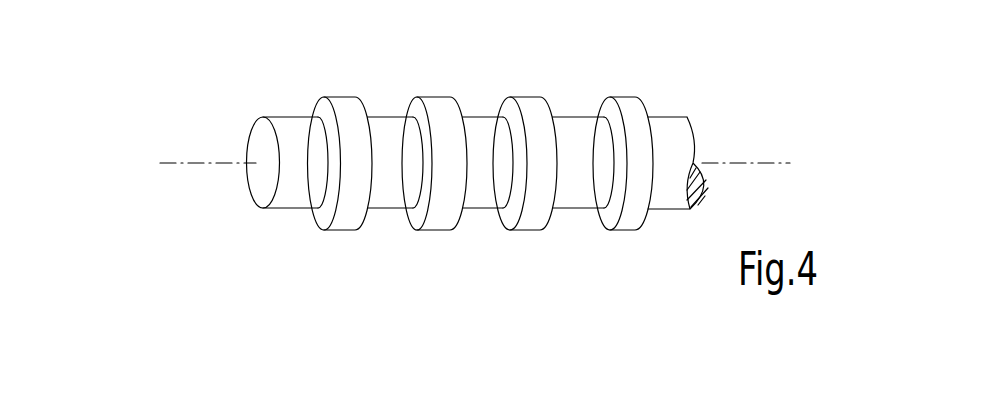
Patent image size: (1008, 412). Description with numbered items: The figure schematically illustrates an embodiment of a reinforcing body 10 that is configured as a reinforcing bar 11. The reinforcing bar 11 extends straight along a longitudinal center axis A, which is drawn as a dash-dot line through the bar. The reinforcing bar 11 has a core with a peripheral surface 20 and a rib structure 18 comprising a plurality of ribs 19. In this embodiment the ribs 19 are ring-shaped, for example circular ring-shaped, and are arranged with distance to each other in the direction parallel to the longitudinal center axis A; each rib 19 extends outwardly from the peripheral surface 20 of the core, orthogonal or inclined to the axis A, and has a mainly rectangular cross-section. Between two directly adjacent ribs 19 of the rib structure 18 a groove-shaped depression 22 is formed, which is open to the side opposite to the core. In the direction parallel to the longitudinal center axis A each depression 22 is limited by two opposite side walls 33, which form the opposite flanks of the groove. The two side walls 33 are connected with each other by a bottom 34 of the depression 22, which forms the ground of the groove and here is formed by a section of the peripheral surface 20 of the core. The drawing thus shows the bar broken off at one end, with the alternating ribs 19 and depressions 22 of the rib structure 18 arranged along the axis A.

The reinforcing body 10 is at (448, 178).
The reinforcing bar 11 is at (566, 71).
The rib structure 18 is at (346, 276).
The rib 19 is at (427, 100).
The peripheral surface 20 is at (688, 123).
The groove-shaped depression 22 is at (387, 209).
The side wall 33 is at (498, 108).
The bottom 34 is at (382, 157).
The longitudinal center axis A is at (172, 163).